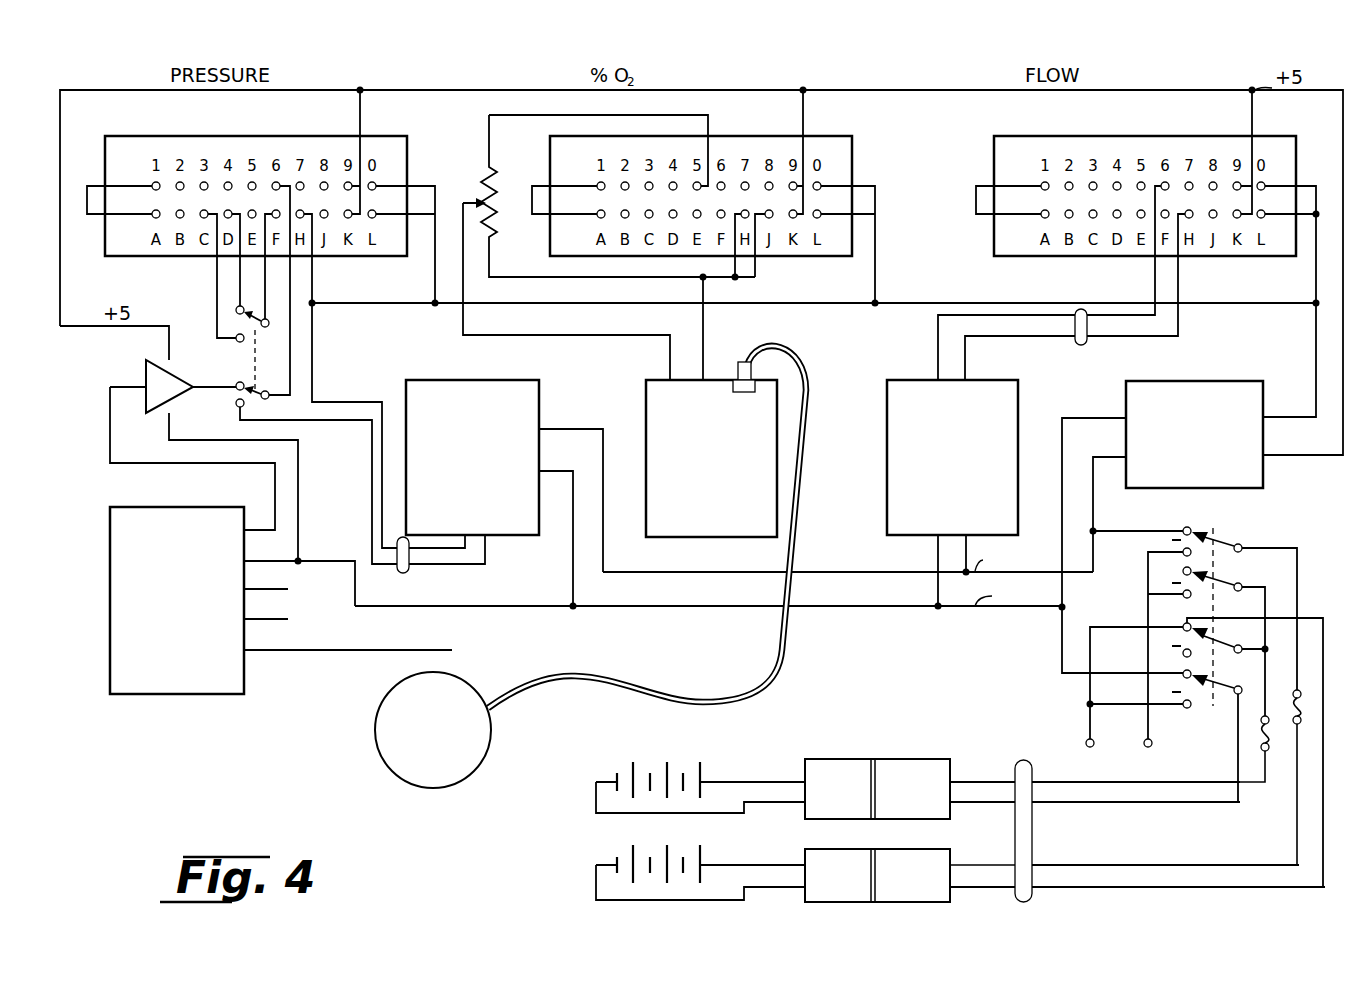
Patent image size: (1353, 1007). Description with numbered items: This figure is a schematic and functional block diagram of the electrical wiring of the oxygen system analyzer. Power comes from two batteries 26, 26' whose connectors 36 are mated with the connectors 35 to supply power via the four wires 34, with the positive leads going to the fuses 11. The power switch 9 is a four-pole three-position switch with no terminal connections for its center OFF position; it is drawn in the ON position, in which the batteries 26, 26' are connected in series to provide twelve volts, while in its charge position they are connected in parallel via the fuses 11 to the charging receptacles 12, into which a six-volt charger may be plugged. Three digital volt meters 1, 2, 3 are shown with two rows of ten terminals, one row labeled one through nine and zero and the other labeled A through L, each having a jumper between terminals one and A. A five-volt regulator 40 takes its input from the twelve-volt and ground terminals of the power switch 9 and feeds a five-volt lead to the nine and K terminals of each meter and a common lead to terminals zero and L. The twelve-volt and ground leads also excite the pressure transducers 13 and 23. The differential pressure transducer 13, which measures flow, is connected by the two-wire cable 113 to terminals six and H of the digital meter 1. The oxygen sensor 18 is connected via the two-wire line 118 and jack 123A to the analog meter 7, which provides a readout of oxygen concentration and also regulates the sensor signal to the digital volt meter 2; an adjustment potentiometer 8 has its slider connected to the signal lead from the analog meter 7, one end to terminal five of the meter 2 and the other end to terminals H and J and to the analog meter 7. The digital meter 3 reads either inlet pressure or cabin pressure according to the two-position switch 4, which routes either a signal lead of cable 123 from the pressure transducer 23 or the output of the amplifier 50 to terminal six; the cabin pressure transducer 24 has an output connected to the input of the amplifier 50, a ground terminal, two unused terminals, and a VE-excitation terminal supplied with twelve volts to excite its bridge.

The digital volt meter 1 is at (994, 150).
The digital volt meter 2 is at (845, 160).
The digital volt meter 3 is at (408, 158).
The two-position switch 4 is at (258, 344).
The analog meter 7 is at (646, 392).
The adjustment potentiometer 8 is at (484, 192).
The power switch 9 is at (1215, 571).
The fuses 11 is at (1262, 731).
The charging receptacles 12 is at (1143, 741).
The differential pressure transducer 13 is at (918, 380).
The oxygen sensor 18 is at (378, 718).
The pressure transducer 23 is at (430, 380).
The cabin pressure transducer 24 is at (170, 694).
The battery 26 is at (697, 770).
The battery 26' is at (675, 859).
The wires 34 is at (1158, 812).
The connectors 35 is at (950, 846).
The connectors 36 is at (810, 846).
The +5-volt regulator 40 is at (1200, 381).
The amplifier 50 is at (146, 376).
The two-wire cable 113 is at (1086, 343).
The two-wire line 118 is at (523, 682).
The cable 123 is at (408, 575).
The jack 123A is at (736, 371).